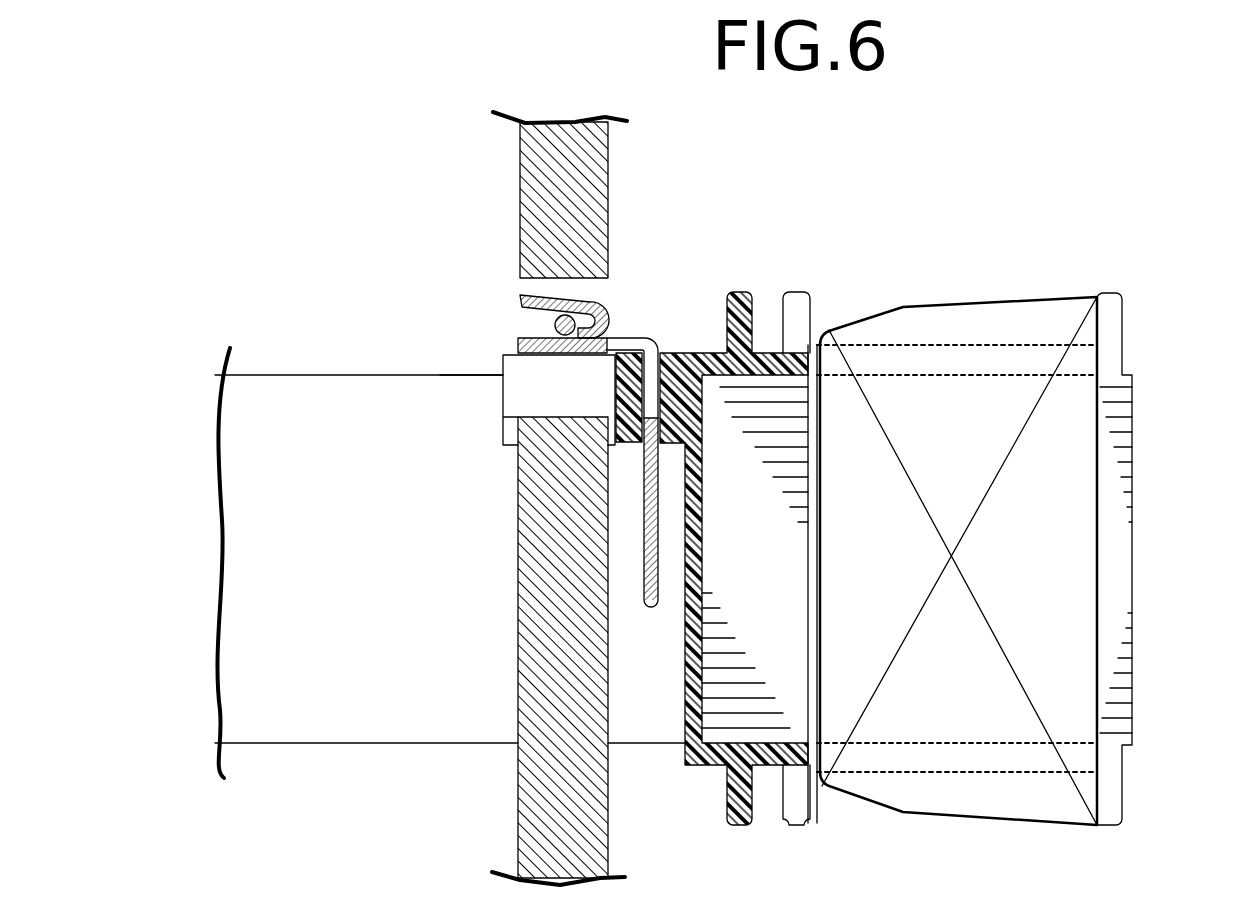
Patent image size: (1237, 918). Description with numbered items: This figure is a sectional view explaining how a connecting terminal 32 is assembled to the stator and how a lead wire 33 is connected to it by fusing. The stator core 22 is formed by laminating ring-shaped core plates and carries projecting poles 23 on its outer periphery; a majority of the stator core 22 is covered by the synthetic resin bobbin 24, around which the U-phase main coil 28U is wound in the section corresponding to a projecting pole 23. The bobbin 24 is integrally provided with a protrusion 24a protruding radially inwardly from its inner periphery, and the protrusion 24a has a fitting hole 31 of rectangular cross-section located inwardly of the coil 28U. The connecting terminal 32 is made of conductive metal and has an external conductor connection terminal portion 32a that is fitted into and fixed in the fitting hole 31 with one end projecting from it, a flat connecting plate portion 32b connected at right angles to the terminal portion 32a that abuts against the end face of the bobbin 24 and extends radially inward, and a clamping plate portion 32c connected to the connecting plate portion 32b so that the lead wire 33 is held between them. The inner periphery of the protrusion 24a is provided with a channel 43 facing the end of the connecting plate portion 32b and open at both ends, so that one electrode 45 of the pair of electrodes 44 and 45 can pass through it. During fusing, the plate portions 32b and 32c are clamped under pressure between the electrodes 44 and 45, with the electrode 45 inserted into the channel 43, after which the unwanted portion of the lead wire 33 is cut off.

The stator core 22 is at (775, 594).
The projecting pole 23 is at (1120, 505).
The bobbin 24 is at (797, 330).
The protrusion 24a is at (503, 388).
The U-phase main coil 28U is at (927, 318).
The fitting hole 31 is at (648, 388).
The connecting terminal 32 is at (636, 562).
The external conductor connection terminal portion 32a is at (656, 467).
The connecting plate portion 32b is at (522, 346).
The clamping plate portion 32c is at (527, 298).
The lead wire 33 is at (552, 320).
The channel 43 is at (613, 380).
The electrode 44 is at (583, 185).
The electrode 45 is at (540, 680).